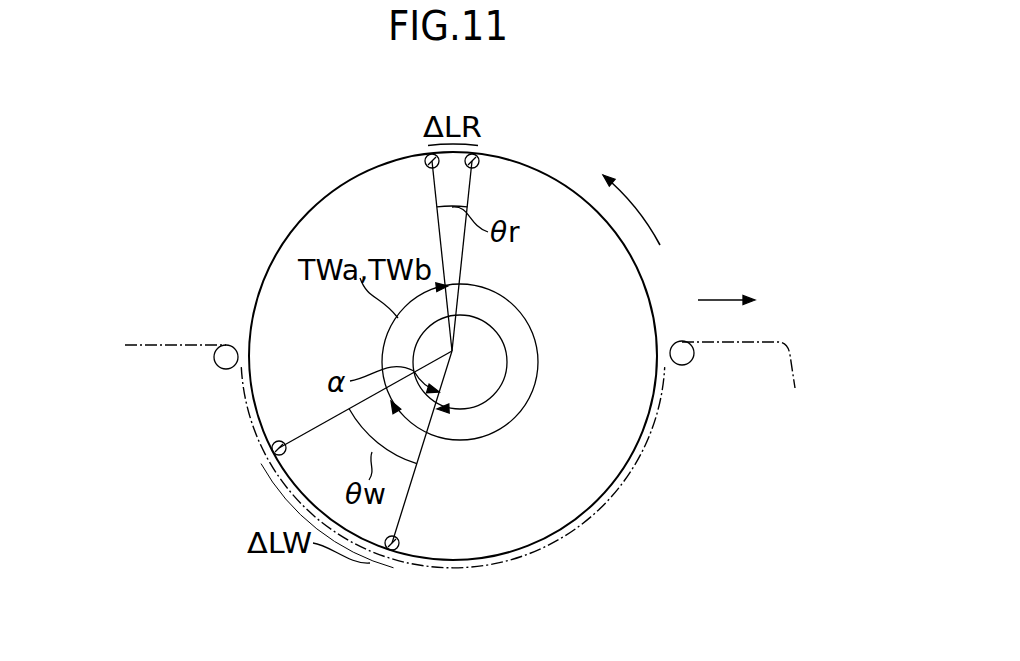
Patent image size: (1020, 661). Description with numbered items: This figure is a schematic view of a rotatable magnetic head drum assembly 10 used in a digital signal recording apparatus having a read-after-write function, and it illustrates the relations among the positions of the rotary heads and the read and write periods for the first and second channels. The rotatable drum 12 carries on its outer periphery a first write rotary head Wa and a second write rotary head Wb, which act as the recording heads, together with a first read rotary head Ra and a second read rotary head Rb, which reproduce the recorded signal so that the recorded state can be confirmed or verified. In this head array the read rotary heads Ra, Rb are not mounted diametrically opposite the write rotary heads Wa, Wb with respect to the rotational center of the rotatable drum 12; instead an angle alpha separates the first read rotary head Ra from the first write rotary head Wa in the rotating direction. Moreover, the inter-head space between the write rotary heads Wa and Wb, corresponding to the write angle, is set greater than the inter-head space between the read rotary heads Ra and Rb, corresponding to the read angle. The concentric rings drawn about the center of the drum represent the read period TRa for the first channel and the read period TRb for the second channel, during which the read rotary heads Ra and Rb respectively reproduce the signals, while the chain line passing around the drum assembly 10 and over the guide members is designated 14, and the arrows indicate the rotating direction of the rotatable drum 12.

The rotatable magnetic head drum assembly 10 is at (717, 117).
The rotatable drum 12 is at (302, 216).
The belt 14 is at (468, 454).
The first read rotary head Ra is at (420, 157).
The second read rotary head Rb is at (486, 157).
The first write rotary head Wa is at (397, 550).
The second write rotary head Wb is at (275, 443).
The read period for first channel TRa is at (503, 382).
The read period for second channel TRb is at (520, 305).